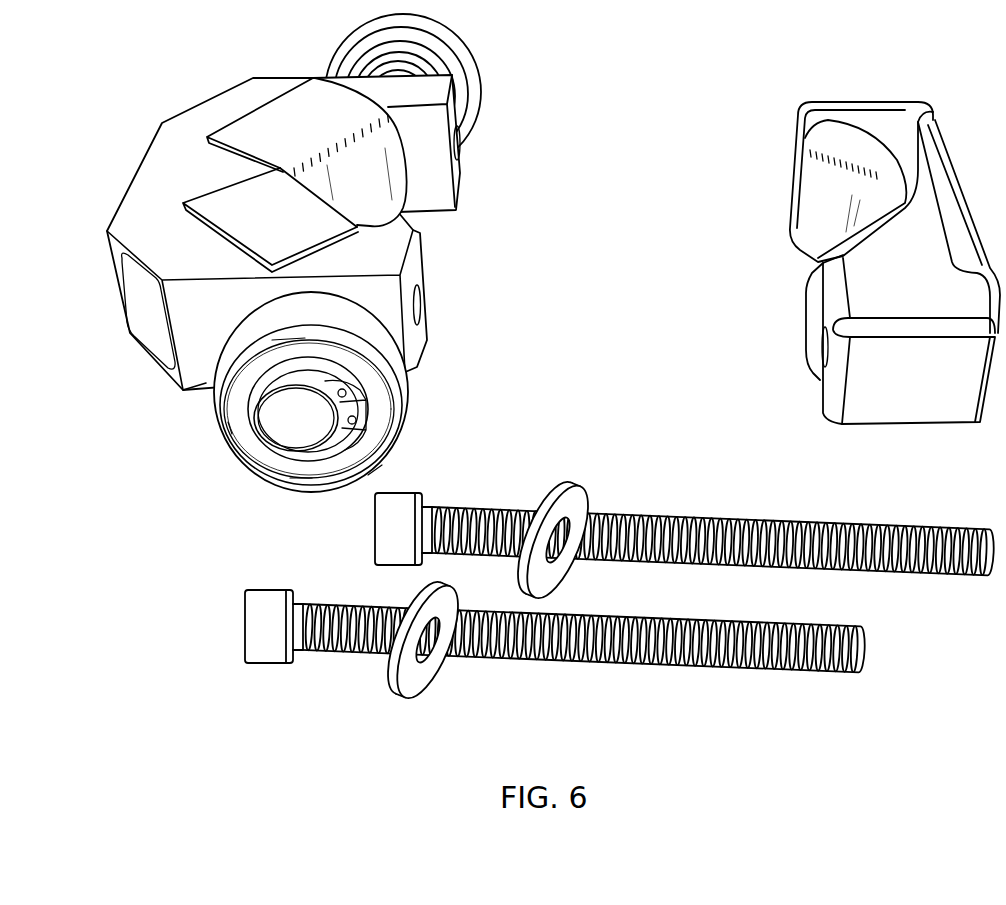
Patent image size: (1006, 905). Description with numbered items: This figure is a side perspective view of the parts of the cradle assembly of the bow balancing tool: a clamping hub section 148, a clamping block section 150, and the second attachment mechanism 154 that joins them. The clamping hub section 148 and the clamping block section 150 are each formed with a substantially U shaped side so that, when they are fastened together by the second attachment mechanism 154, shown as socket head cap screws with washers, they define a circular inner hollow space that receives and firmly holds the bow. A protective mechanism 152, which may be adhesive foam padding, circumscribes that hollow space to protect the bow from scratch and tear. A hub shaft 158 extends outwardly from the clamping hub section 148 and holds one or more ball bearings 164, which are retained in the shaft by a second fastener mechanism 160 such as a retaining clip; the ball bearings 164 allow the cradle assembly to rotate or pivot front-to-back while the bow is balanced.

The clamping hub section 148 is at (180, 123).
The clamping block section 150 is at (827, 108).
The protective mechanism 152 is at (290, 107).
The second attachment mechanism 154 is at (913, 570).
The hub shaft 158 is at (293, 433).
The second fastener mechanism 160 is at (253, 400).
The ball bearings 164 is at (390, 353).